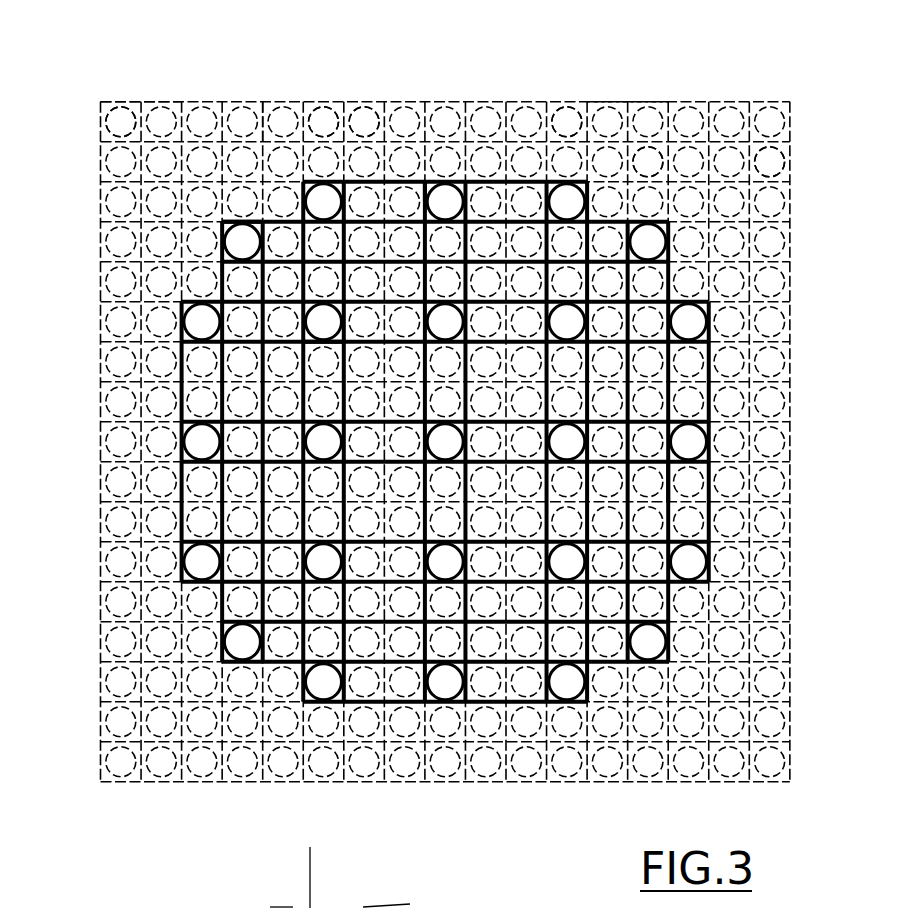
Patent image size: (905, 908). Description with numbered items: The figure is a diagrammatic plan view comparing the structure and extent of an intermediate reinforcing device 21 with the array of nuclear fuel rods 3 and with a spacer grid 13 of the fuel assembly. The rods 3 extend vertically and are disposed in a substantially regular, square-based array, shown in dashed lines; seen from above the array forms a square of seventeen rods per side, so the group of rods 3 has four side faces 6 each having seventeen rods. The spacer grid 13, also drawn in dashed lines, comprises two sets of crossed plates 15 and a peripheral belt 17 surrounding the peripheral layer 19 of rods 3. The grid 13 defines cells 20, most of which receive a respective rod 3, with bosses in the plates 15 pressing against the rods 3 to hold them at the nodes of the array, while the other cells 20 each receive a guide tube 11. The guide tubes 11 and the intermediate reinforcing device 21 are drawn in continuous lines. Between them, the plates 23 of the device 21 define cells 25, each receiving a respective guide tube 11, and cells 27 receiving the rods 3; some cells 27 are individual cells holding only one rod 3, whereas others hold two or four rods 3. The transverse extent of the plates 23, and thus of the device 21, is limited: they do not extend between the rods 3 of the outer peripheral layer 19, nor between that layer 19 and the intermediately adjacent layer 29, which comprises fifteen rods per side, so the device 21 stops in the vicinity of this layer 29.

The rods 3 is at (197, 108).
The side faces 6 is at (218, 86).
The guide tubes 11 is at (361, 178).
The spacer grid 13 is at (265, 88).
The crossed plates 15 is at (310, 103).
The peripheral belt 17 is at (573, 100).
The peripheral layer 19 is at (628, 96).
The cells 20 is at (98, 108).
The intermediate reinforcing device 21 is at (423, 168).
The plates 23 is at (515, 224).
The cells 25 is at (222, 222).
The cells 27 is at (307, 345).
The intermediately adjacent layer 29 is at (650, 160).